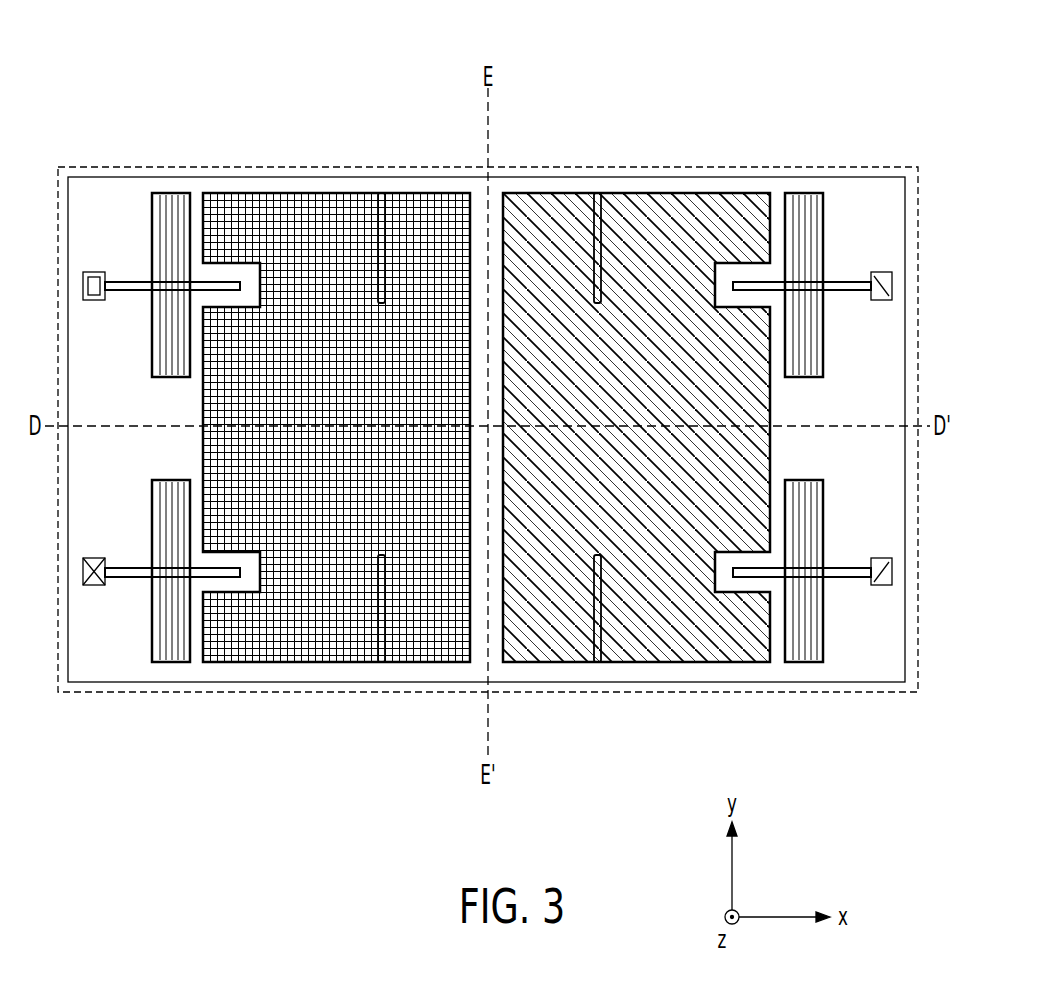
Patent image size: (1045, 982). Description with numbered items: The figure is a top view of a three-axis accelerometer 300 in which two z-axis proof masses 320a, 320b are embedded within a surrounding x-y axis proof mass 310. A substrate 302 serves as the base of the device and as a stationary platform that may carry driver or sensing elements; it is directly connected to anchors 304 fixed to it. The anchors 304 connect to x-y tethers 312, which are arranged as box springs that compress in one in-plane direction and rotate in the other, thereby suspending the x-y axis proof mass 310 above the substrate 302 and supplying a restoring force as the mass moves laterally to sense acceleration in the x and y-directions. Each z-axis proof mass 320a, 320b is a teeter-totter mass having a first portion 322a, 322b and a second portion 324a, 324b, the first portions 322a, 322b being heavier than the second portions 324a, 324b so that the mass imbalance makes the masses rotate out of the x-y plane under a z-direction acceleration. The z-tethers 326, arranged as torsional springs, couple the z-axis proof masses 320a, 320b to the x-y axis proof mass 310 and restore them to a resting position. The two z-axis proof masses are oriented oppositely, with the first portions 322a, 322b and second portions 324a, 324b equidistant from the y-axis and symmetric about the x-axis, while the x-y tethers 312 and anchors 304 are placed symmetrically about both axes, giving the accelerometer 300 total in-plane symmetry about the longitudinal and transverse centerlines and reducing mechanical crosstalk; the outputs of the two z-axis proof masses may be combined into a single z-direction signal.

The three-axis accelerometer 300 is at (157, 87).
The substrate 302 is at (903, 692).
The anchors 304 is at (94, 283).
The x-y axis proof mass 310 is at (485, 235).
The x-y tethers 312 is at (170, 280).
The z-axis proof mass 320a is at (332, 380).
The z-axis proof mass 320b is at (640, 378).
The first portion 322a is at (278, 242).
The first portion 322b is at (697, 243).
The second portion 324a is at (435, 247).
The second portion 324b is at (540, 245).
The z-tethers 326 is at (380, 202).